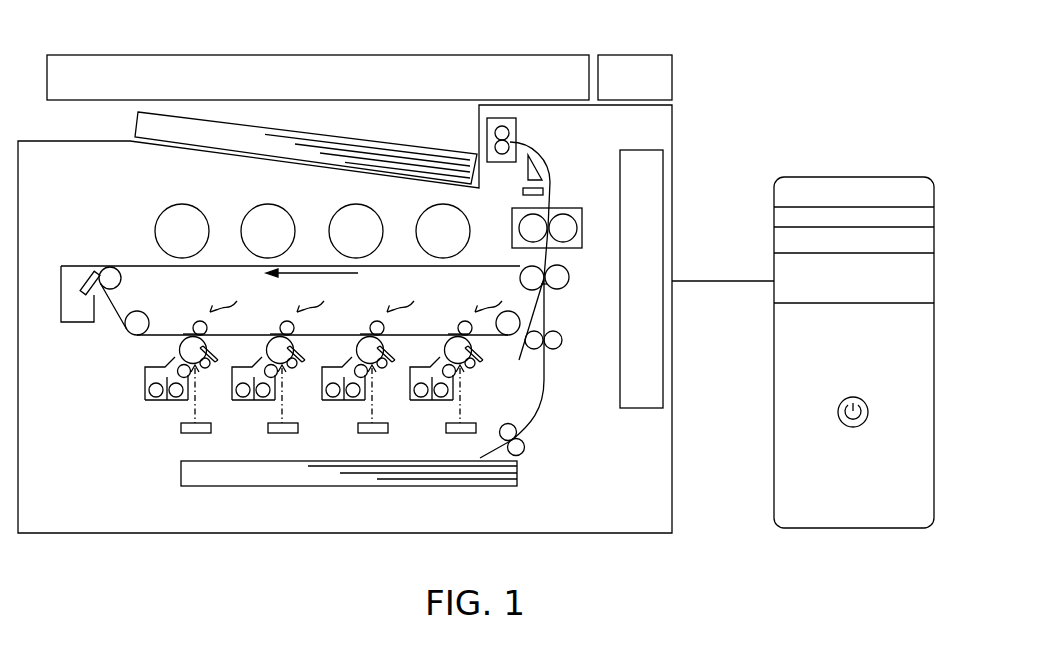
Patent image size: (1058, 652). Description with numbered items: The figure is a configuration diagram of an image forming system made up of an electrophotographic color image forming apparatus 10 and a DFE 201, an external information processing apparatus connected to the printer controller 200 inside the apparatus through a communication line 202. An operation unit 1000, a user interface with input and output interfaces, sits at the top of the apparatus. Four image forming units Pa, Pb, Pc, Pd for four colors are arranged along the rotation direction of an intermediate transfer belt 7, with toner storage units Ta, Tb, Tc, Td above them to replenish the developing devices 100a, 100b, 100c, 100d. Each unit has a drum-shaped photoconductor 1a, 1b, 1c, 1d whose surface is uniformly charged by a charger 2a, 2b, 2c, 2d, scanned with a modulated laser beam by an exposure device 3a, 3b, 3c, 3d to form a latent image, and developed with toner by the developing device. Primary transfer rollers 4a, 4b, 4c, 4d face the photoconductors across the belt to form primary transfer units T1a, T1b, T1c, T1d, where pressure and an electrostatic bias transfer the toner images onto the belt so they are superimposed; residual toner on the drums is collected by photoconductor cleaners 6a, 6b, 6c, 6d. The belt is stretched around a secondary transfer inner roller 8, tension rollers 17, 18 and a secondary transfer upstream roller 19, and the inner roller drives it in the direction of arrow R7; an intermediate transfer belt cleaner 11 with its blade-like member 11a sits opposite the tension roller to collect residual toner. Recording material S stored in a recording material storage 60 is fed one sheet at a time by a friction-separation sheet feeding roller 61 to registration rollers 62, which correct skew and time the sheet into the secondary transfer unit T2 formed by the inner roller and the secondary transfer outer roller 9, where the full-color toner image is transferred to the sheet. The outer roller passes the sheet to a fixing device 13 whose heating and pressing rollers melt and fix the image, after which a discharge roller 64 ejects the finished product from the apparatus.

The operation unit 1000 is at (645, 54).
The image forming apparatus 10 is at (46, 140).
The printer controller 200 is at (638, 150).
The DFE 201 is at (862, 177).
The communication line 202 is at (712, 280).
The discharge roller 64 is at (516, 128).
The fixing device 13 is at (583, 208).
The intermediate transfer belt 7 is at (152, 265).
The arrow R7 is at (325, 280).
The intermediate transfer belt cleaner 11 is at (70, 264).
The cleaning blade 11a is at (82, 282).
The tension roller 17 is at (104, 267).
The tension roller 18 is at (135, 311).
The secondary transfer inner roller 8 is at (521, 270).
The secondary transfer outer roller 9 is at (570, 272).
The secondary transfer unit T2 is at (556, 291).
The secondary transfer upstream roller 19 is at (522, 348).
The registration rollers 62 is at (558, 348).
The sheet feeding roller 61 is at (524, 452).
The recording material storage 60 is at (181, 472).
The recording material S is at (405, 482).
The toner storage unit Ta is at (166, 210).
The toner storage unit Tb is at (252, 210).
The toner storage unit Tc is at (340, 210).
The toner storage unit Td is at (426, 210).
The photoconductor 1a is at (179, 350).
The photoconductor 1b is at (266, 350).
The photoconductor 1c is at (356, 350).
The photoconductor 1d is at (444, 350).
The primary transfer roller 4a is at (200, 321).
The primary transfer roller 4b is at (287, 321).
The primary transfer roller 4c is at (377, 321).
The primary transfer roller 4d is at (465, 321).
The primary transfer unit T1a is at (191, 334).
The primary transfer unit T1b is at (278, 334).
The primary transfer unit T1c is at (368, 334).
The primary transfer unit T1d is at (456, 334).
The image forming unit Pa is at (241, 299).
The image forming unit Pb is at (328, 299).
The image forming unit Pc is at (418, 299).
The image forming unit Pd is at (506, 299).
The photoconductor cleaner 6a is at (206, 366).
The photoconductor cleaner 6b is at (293, 366).
The photoconductor cleaner 6c is at (383, 366).
The photoconductor cleaner 6d is at (476, 358).
The charger 2a is at (204, 394).
The charger 2b is at (291, 394).
The charger 2c is at (381, 394).
The charger 2d is at (470, 394).
The developing device 100a is at (150, 403).
The developing device 100b is at (240, 403).
The developing device 100c is at (330, 403).
The developing device 100d is at (418, 403).
The exposure device 3a is at (185, 433).
The exposure device 3b is at (272, 433).
The exposure device 3c is at (362, 433).
The exposure device 3d is at (450, 433).